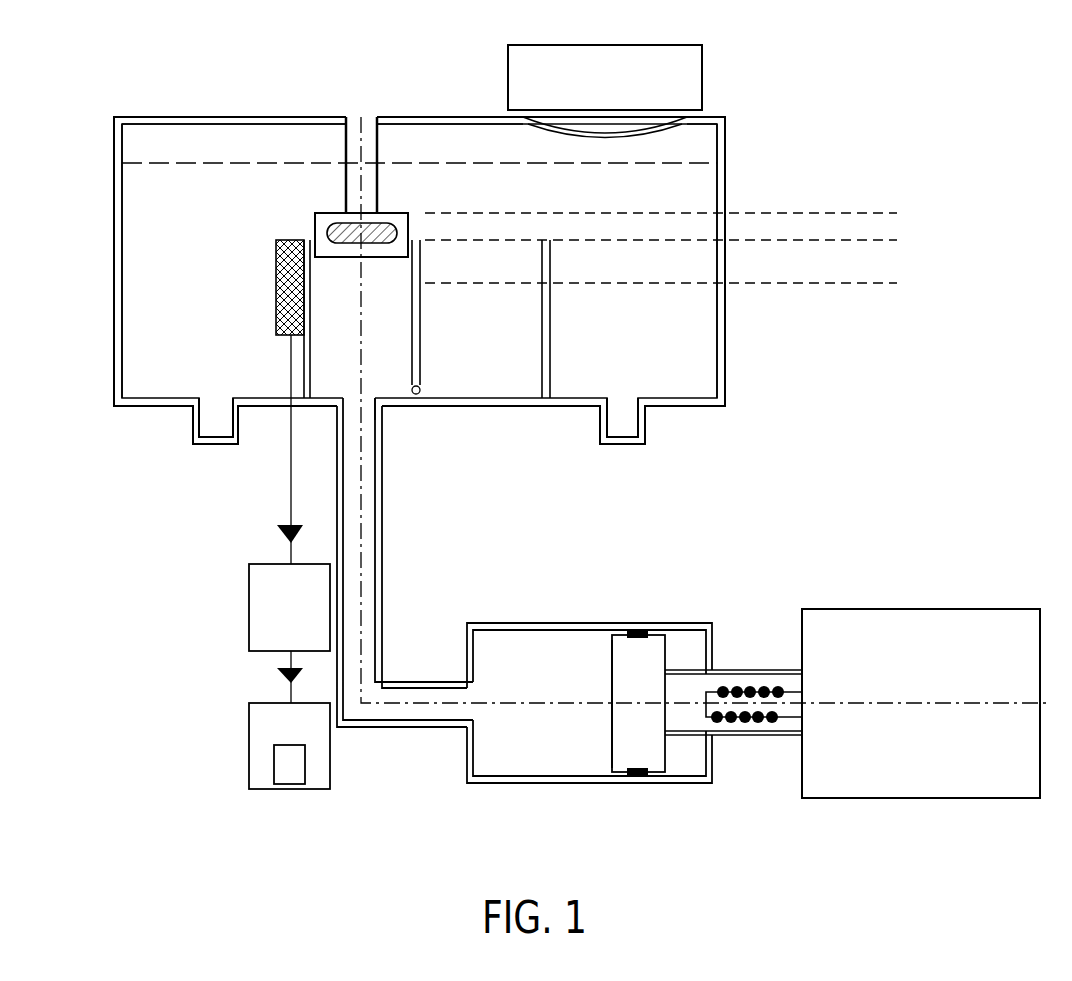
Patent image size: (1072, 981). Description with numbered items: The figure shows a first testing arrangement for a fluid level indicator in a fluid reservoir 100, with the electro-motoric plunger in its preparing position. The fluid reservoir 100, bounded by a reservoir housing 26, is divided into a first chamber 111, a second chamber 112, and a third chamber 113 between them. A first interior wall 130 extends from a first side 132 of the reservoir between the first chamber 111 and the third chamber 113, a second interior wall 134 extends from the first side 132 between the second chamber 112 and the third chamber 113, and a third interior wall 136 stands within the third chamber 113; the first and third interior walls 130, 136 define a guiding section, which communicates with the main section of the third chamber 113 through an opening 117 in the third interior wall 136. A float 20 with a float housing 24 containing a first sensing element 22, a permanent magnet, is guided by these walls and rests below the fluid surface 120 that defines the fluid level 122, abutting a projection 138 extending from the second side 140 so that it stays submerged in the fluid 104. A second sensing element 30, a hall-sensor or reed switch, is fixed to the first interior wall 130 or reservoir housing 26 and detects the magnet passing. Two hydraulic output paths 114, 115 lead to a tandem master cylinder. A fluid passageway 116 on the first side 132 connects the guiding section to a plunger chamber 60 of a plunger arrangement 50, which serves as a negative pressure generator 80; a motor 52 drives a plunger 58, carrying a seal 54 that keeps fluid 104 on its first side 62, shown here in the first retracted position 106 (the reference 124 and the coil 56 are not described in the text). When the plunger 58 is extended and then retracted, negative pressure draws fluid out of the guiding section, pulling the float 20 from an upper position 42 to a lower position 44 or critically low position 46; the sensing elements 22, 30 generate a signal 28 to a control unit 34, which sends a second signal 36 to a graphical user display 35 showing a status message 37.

The fluid reservoir 100 is at (88, 138).
The fluid 104 is at (673, 273).
The first retracted position 106 is at (589, 668).
The first chamber 111 is at (228, 366).
The second chamber 112 is at (640, 366).
The third chamber 113 is at (402, 322).
The hydraulic output path 114 is at (217, 423).
The hydraulic output path 115 is at (622, 420).
The fluid passageway 116 is at (370, 490).
The opening 117 is at (420, 394).
The fluid surface 120 is at (693, 158).
The fluid level 122 is at (695, 156).
The vessel 124 is at (500, 783).
The first interior wall 130 is at (308, 313).
The first side 132 is at (390, 400).
The second interior wall 134 is at (420, 365).
The third interior wall 136 is at (550, 298).
The projection 138 is at (368, 162).
The second side 140 is at (447, 118).
The float 20 is at (316, 192).
The first sensing element 22 is at (382, 235).
The float housing 24 is at (325, 212).
The reservoir housing 26 is at (114, 278).
The signal 28 is at (285, 532).
The second sensing element 30 is at (275, 283).
The control unit 34 is at (296, 620).
The graphical user display 35 is at (300, 736).
The second signal 36 is at (285, 675).
The status message 37 is at (300, 780).
The upper position 42 is at (805, 208).
The lower position 44 is at (877, 235).
The critically low position 46 is at (862, 285).
The plunger arrangement 50 is at (852, 643).
The motor 52 is at (930, 669).
The seal 54 is at (640, 630).
The heating coil 56 is at (743, 732).
The plunger 58 is at (620, 645).
The plunger chamber 60 is at (555, 754).
The first side 62 is at (612, 670).
The negative pressure generator 80 is at (805, 556).